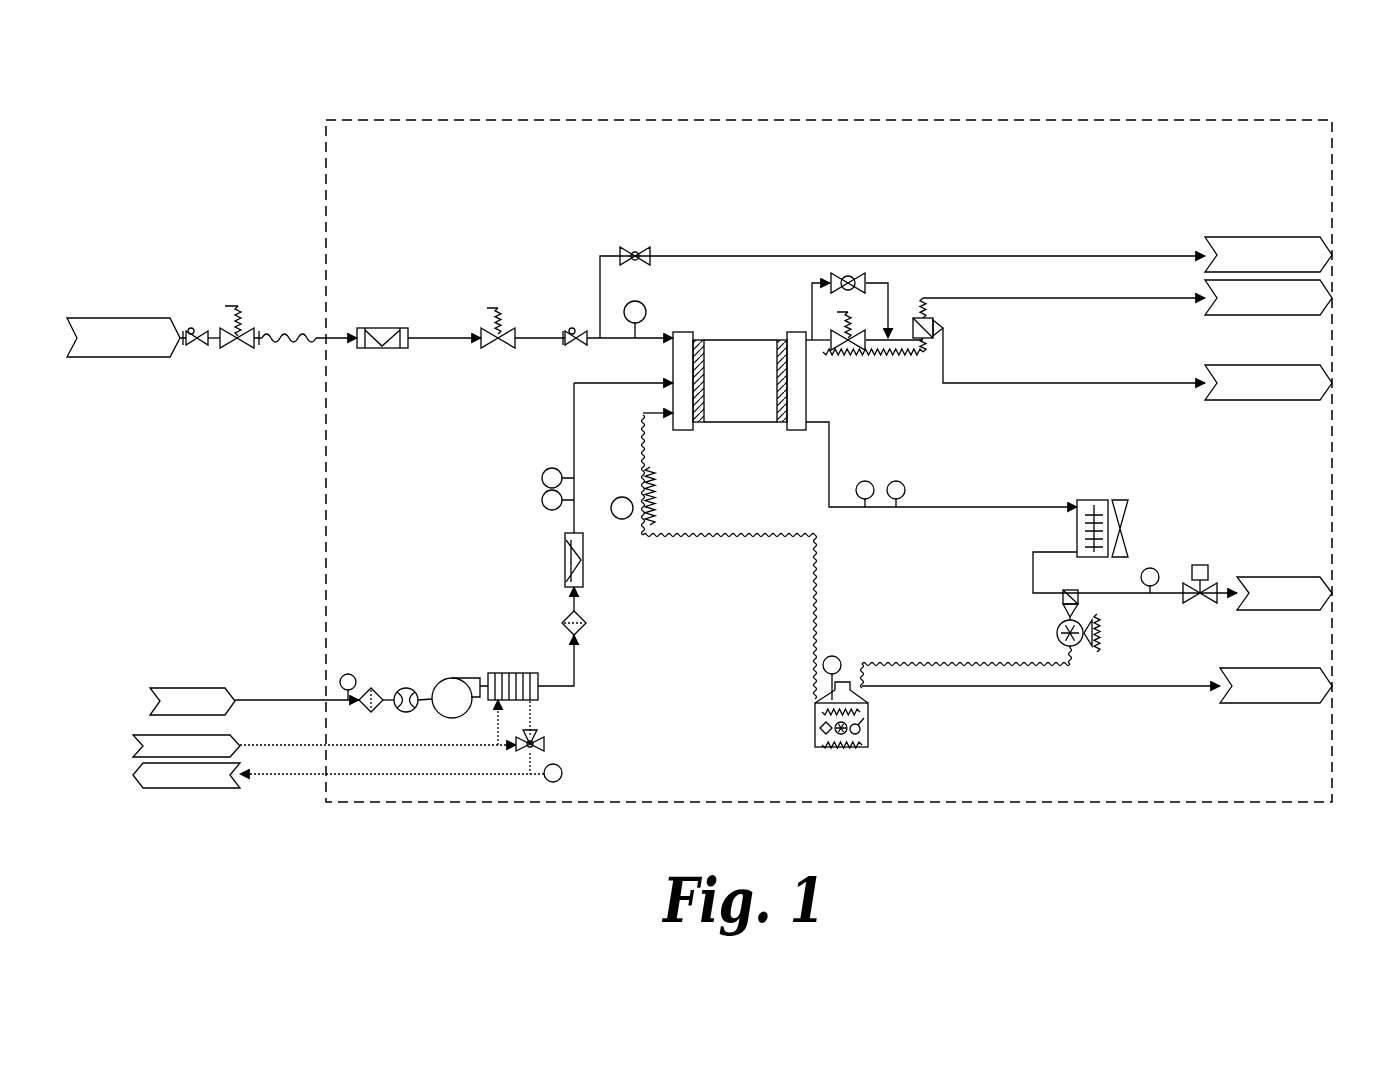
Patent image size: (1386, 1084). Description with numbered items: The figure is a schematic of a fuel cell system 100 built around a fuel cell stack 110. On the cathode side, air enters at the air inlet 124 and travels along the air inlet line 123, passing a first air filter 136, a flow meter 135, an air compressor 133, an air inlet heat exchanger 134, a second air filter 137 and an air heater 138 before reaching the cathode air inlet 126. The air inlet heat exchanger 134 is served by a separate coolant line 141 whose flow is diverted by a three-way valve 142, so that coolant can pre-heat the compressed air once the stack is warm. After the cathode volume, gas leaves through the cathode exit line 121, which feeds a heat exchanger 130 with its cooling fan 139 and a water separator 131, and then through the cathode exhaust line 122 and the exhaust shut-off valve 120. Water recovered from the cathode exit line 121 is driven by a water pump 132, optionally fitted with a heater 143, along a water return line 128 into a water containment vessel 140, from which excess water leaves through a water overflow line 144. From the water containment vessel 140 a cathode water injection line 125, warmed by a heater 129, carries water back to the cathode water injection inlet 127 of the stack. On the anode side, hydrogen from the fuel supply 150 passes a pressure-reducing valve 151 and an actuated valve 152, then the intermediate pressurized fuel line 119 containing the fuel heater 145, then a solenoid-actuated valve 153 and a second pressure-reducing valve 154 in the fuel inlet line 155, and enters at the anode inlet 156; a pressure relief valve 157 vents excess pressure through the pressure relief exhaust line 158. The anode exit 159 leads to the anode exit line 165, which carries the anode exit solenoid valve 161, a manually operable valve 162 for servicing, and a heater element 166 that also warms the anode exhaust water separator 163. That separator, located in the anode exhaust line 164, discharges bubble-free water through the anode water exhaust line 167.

The fuel cell system 100 is at (1333, 207).
The fuel cell stack 110 is at (737, 336).
The intermediate pressurized fuel line 119 is at (278, 330).
The exhaust shut-off valve 120 is at (1207, 583).
The cathode exit line 121 is at (960, 506).
The cathode exhaust line 122 is at (1133, 596).
The air inlet line 123 is at (573, 420).
The air inlet 124 is at (333, 700).
The cathode water injection line 125 is at (750, 533).
The cathode air inlet 126 is at (672, 380).
The cathode water injection inlet 127 is at (672, 412).
The water return line 128 is at (952, 662).
The heater 129 is at (653, 488).
The heat exchanger 130 is at (1098, 500).
The water separator 131 is at (1074, 590).
The water pump 132 is at (1057, 630).
The air compressor 133 is at (455, 680).
The air inlet heat exchanger 134 is at (538, 695).
The flow meter 135 is at (407, 687).
The air filter 136 is at (372, 687).
The air filter 137 is at (583, 628).
The air heater 138 is at (583, 563).
The cooling fan 139 is at (1128, 508).
The water containment vessel 140 is at (810, 702).
The coolant line 141 is at (303, 778).
The three-way valve 142 is at (540, 744).
The heater 143 is at (1103, 630).
The water overflow line 144 is at (1020, 688).
The fuel heater 145 is at (383, 328).
The fuel supply 150 is at (135, 318).
The pressure-reducing valve 151 is at (200, 330).
The actuated valve 152 is at (242, 344).
The solenoid-actuated valve 153 is at (492, 328).
The pressure-reducing valve 154 is at (570, 327).
The fuel inlet line 155 is at (532, 348).
The anode inlet 156 is at (665, 338).
The pressure relief valve 157 is at (647, 250).
The pressure relief exhaust line 158 is at (1015, 255).
The anode exit 159 is at (807, 343).
The anode exit solenoid valve 161 is at (882, 356).
The manually operable valve 162 is at (848, 273).
The anode exhaust water separator 163 is at (937, 327).
The anode exhaust line 164 is at (1020, 298).
The anode exit line 165 is at (903, 333).
The heater element 166 is at (862, 357).
The anode water exhaust line 167 is at (1092, 382).